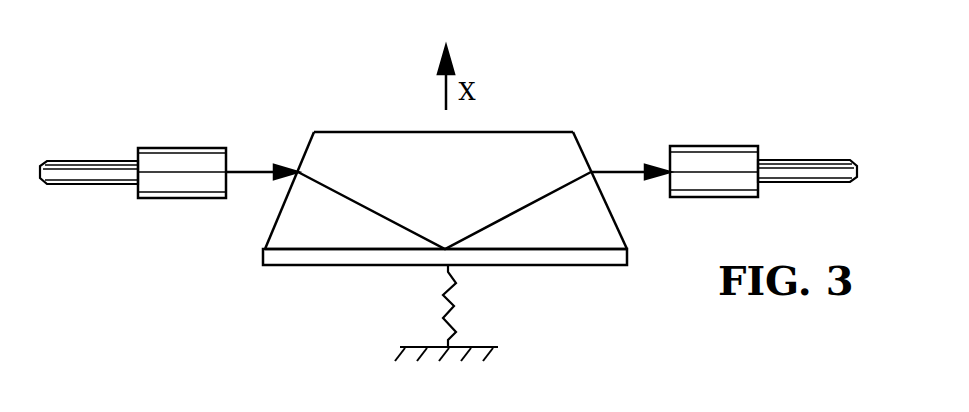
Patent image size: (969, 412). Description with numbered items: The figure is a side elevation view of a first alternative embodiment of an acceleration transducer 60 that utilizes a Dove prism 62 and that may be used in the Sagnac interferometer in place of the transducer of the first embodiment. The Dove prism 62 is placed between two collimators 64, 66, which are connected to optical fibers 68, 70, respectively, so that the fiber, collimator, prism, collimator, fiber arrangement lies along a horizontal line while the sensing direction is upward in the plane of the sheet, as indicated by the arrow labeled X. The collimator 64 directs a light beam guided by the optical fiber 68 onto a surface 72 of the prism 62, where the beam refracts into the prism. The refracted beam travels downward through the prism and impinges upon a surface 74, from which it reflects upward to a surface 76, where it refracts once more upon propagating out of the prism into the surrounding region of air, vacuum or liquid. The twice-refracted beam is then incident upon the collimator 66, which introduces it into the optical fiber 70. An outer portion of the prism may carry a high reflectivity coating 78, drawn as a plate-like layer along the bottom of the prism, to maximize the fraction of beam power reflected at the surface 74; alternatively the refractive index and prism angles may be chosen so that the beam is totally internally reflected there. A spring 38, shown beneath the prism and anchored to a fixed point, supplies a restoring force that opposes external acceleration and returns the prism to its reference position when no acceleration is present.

The spring 38 is at (452, 313).
The transducer 60 is at (284, 83).
The Dove prism 62 is at (367, 130).
The collimator 64 is at (175, 148).
The collimator 66 is at (718, 145).
The optical fiber 68 is at (70, 161).
The optical fiber 70 is at (803, 158).
The surface of the prism 72 is at (310, 141).
The surface of the prism 74 is at (292, 250).
The surface of the prism 76 is at (583, 150).
The high reflectivity coating 78 is at (350, 267).